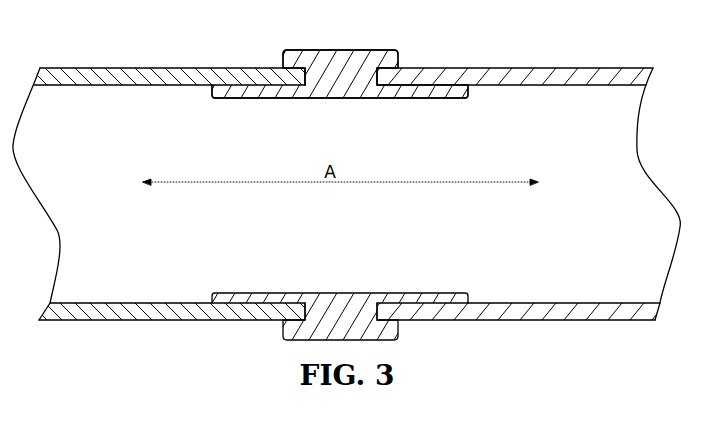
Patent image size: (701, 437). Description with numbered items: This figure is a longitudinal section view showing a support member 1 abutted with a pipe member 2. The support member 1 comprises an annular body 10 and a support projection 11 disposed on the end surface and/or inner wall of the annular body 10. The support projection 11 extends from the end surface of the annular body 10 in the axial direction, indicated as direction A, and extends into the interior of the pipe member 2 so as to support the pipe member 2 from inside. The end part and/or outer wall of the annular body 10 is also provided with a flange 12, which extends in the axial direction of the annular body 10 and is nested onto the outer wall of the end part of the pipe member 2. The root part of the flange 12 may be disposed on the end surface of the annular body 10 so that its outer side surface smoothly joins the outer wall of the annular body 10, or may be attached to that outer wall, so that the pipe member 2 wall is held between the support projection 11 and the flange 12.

The support member 1 is at (368, 58).
The pipe member 2 is at (133, 79).
The annular body 10 is at (352, 88).
The support projection 11 is at (438, 100).
The flange 12 is at (291, 52).